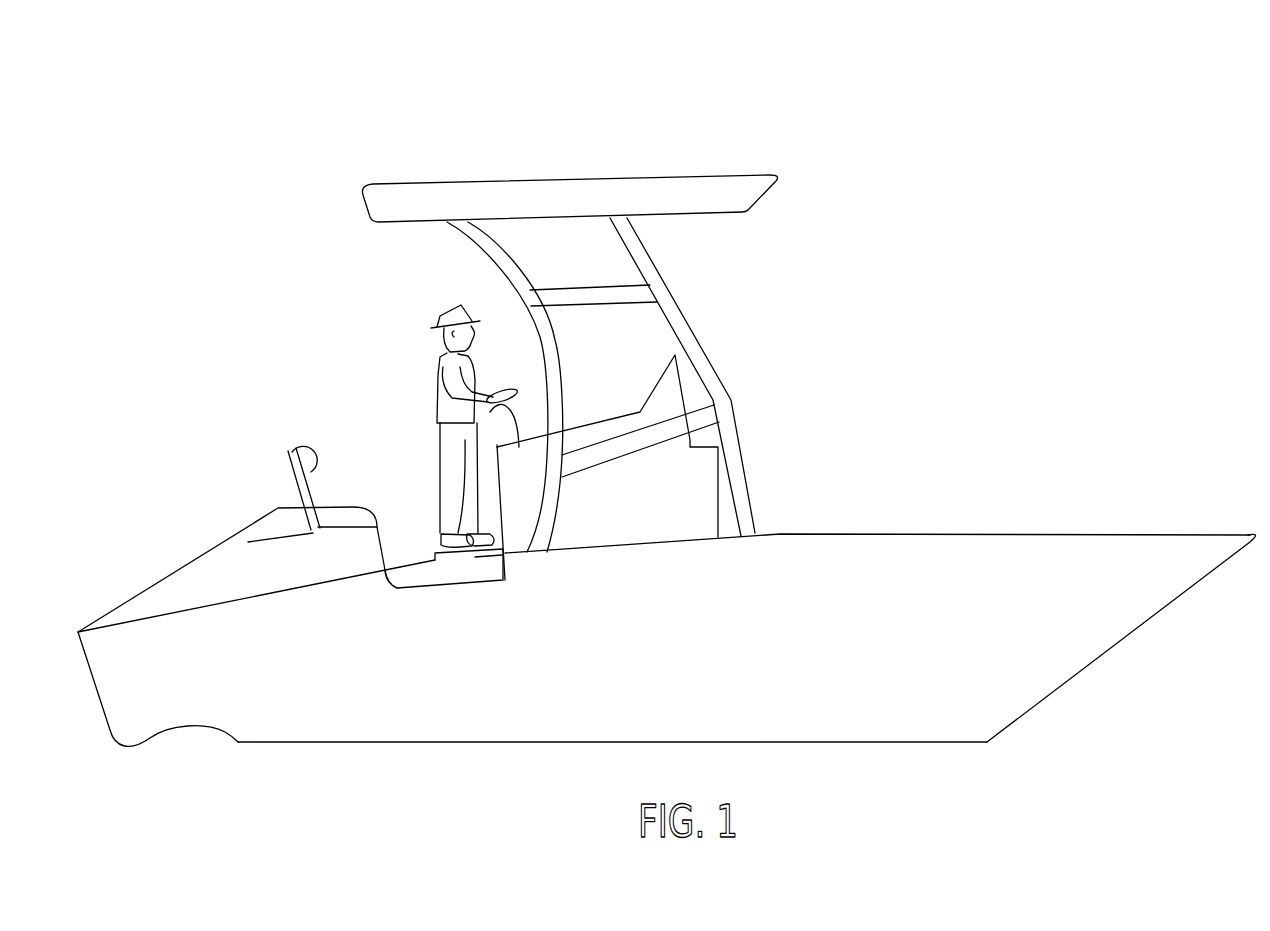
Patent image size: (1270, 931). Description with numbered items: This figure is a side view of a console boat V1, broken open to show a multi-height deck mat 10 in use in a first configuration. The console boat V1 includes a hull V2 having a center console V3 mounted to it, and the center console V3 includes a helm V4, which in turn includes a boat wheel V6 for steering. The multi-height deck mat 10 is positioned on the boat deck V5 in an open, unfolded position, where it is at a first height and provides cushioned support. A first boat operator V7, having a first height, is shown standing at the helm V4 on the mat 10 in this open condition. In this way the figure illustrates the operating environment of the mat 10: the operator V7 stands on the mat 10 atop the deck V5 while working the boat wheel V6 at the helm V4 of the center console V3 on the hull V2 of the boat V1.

The console boat V1 is at (765, 510).
The hull V2 is at (862, 730).
The center console V3 is at (613, 132).
The helm V4 is at (743, 380).
The boat deck V5 is at (413, 563).
The boat wheel V6 is at (503, 393).
The first boat operator V7 is at (437, 377).
The multi-height deck mat 10 is at (477, 553).